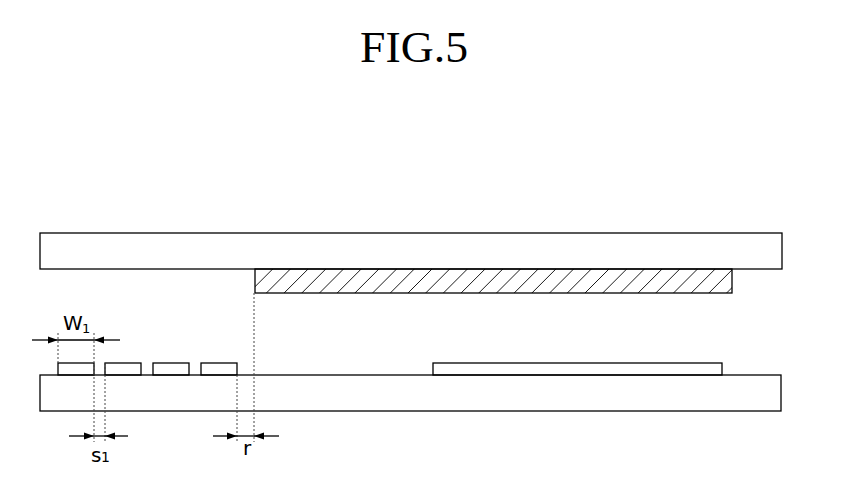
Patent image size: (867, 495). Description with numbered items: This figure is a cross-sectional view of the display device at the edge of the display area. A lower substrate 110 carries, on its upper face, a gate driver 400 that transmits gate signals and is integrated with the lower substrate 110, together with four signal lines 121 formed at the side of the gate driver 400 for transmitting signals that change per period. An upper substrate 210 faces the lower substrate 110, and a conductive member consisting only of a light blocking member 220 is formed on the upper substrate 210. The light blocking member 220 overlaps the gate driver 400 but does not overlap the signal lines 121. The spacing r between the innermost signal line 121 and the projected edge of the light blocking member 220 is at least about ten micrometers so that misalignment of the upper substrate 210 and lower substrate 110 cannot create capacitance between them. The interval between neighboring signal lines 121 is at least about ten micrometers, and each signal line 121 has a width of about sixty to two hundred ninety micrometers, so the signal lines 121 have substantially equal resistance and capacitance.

The lower substrate 110 is at (395, 393).
The signal lines 121 is at (172, 368).
The upper substrate 210 is at (395, 252).
The light blocking member 220 is at (532, 283).
The gate driver 400 is at (532, 370).